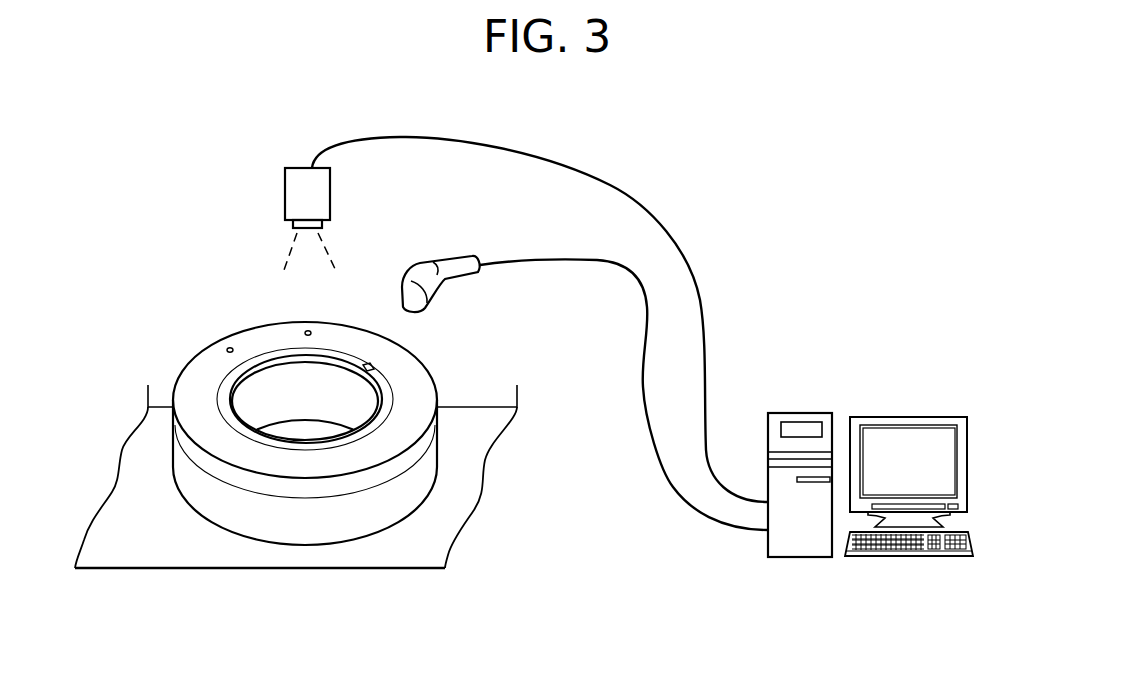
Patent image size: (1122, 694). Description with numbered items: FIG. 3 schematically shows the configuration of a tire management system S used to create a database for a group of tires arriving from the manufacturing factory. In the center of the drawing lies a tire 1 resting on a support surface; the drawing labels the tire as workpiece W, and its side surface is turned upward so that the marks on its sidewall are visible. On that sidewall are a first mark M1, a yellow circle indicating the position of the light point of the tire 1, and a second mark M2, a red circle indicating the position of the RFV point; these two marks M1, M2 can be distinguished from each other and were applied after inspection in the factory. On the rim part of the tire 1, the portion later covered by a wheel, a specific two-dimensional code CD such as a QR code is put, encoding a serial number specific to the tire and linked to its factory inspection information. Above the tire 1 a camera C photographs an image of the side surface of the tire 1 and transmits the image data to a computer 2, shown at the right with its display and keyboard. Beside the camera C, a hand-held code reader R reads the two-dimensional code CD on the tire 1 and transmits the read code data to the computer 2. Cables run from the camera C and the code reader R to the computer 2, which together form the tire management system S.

The tire 1 is at (158, 336).
The computer 2 is at (822, 417).
The camera C is at (297, 176).
The code reader R is at (447, 258).
The workpiece (tire) W is at (420, 388).
The first mark M1 is at (308, 330).
The second mark M2 is at (230, 347).
The two-dimensional code CD is at (369, 364).
The tire management system S is at (863, 214).